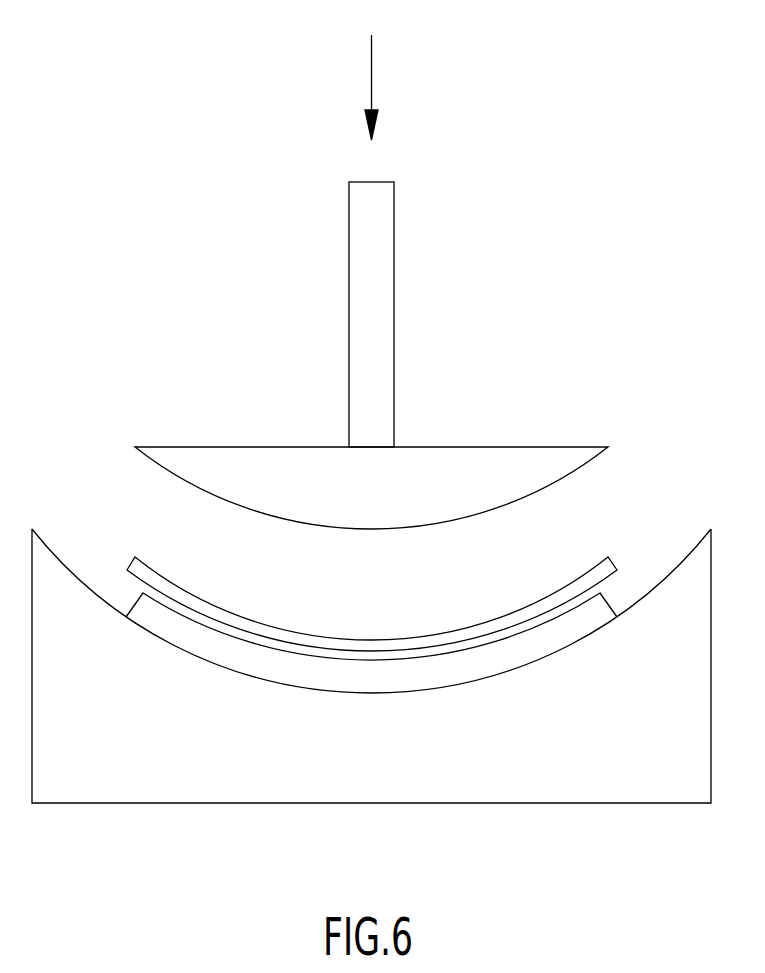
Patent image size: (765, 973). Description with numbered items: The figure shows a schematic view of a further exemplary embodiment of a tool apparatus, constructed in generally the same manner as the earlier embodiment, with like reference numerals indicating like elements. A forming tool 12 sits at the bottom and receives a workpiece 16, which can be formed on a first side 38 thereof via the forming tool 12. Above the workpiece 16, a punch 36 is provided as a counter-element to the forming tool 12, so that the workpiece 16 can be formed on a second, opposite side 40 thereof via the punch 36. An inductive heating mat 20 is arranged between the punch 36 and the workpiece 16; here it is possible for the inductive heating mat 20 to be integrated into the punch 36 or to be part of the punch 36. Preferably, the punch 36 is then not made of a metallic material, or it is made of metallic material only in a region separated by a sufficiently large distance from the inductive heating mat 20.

The forming tool 12 is at (371, 710).
The workpiece 16 is at (403, 682).
The inductive heating mat 20 is at (410, 645).
The punch 36 is at (287, 460).
The first side 38 is at (330, 694).
The second side 40 is at (371, 668).